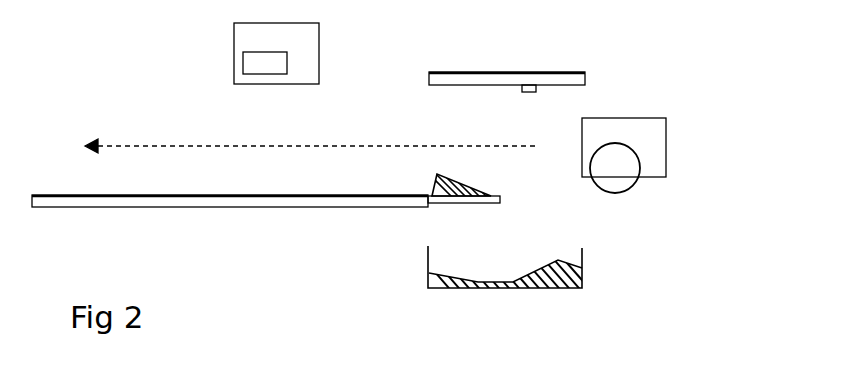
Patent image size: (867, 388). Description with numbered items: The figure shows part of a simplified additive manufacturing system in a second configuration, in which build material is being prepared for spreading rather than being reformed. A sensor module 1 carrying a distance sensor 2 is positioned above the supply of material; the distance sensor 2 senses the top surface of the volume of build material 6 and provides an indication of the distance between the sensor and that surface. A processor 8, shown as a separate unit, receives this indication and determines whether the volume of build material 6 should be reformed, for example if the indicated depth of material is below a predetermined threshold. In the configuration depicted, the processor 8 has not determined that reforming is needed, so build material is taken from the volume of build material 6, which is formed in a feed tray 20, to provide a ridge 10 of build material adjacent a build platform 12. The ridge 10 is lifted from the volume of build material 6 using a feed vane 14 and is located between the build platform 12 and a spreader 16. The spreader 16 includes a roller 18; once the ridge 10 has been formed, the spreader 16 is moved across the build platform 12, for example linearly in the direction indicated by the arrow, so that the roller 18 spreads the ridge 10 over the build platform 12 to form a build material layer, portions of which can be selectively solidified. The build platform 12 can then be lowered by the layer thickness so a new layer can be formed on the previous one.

The sensor module 1 is at (535, 72).
The distance sensor 2 is at (537, 92).
The volume of build material 6 is at (553, 288).
The processor 8 is at (258, 62).
The ridge 10 is at (467, 181).
The build platform 12 is at (293, 207).
The feed vane 14 is at (475, 206).
The spreader 16 is at (666, 140).
The roller 18 is at (623, 178).
The feed tray 20 is at (583, 263).